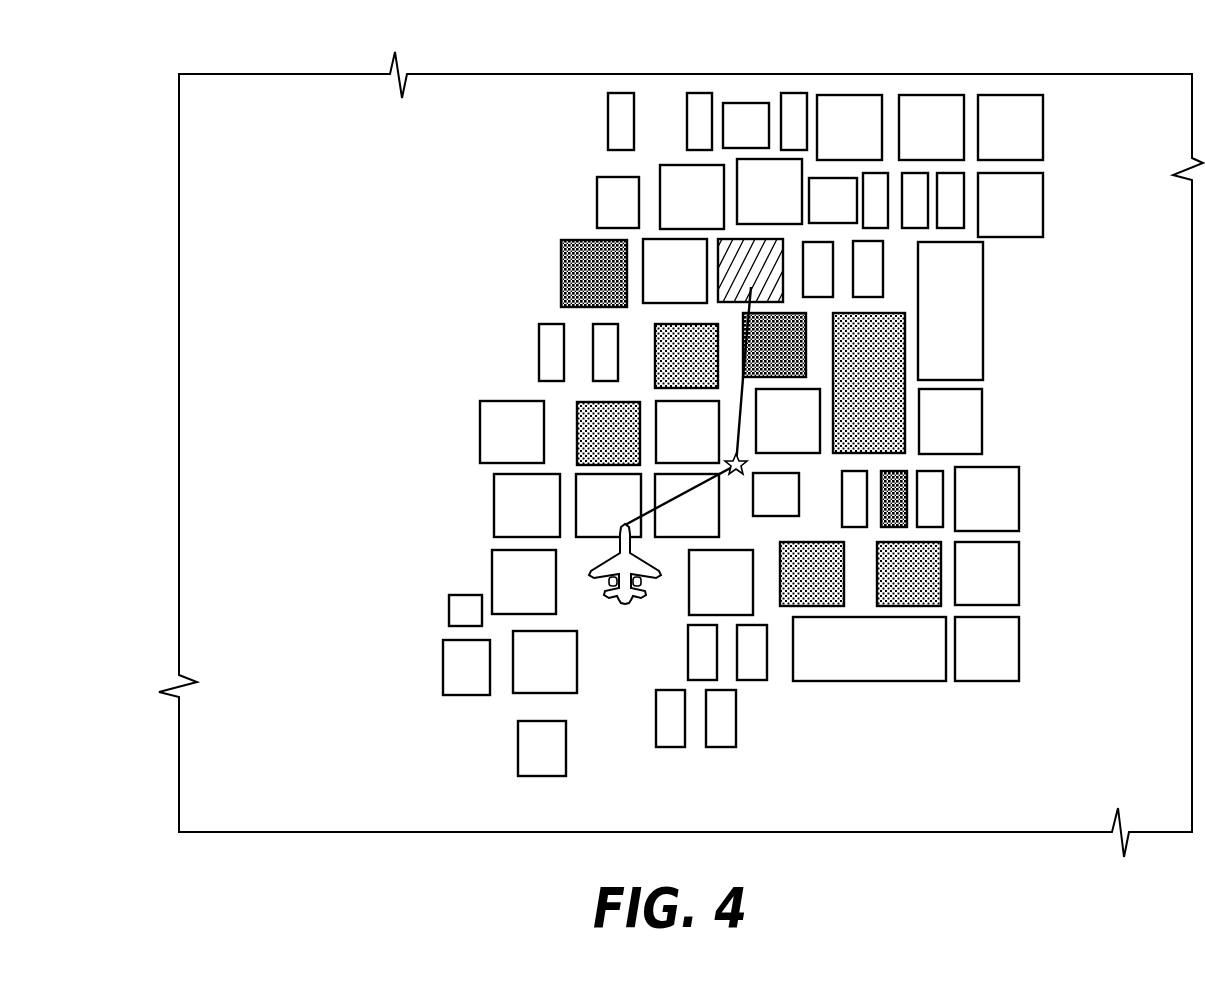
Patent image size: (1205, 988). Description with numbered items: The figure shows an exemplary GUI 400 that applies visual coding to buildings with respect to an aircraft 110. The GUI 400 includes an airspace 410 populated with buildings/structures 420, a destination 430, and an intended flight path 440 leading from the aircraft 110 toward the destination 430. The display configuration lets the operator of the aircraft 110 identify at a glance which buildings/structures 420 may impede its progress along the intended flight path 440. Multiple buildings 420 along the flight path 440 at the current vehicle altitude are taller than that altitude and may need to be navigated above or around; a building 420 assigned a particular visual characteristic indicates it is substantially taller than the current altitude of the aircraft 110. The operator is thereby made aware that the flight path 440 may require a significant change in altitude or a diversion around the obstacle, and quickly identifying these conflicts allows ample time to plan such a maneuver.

The GUI 400 is at (296, 58).
The airspace 410 is at (470, 288).
The buildings/structures 420 is at (493, 438).
The destination 430 is at (770, 258).
The intended flight path 440 is at (743, 407).
The aircraft 110 is at (630, 604).